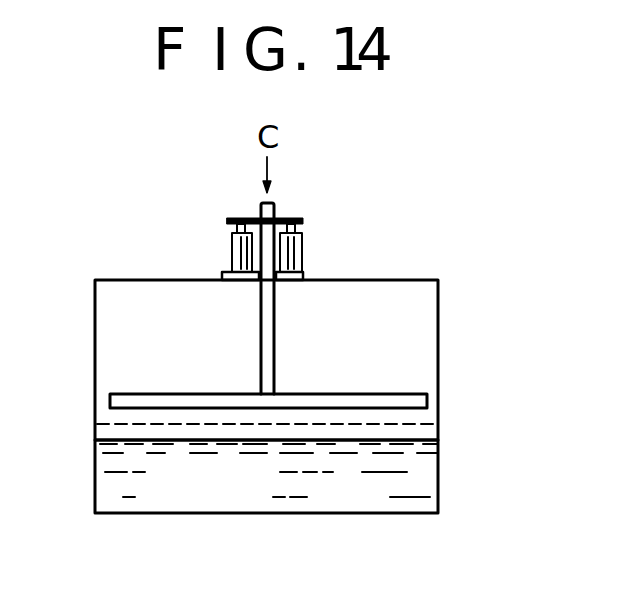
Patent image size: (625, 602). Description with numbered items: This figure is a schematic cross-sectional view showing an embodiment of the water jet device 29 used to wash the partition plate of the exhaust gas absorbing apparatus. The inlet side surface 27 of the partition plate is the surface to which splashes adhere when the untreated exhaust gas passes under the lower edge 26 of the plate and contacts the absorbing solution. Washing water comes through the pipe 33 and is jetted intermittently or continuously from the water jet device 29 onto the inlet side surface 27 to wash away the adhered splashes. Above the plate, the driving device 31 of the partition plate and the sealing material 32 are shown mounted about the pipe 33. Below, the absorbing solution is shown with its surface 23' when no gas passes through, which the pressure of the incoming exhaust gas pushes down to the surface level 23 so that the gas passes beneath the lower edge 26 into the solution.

The surface level 23 is at (266, 476).
The lower edge 26 is at (183, 441).
The surface of the absorbing solution 23' is at (304, 457).
The inlet side surface 27 is at (182, 350).
The water jet device 29 is at (345, 394).
The driving device 31 is at (303, 262).
The sealing material 32 is at (300, 246).
The pipe 33 is at (274, 313).